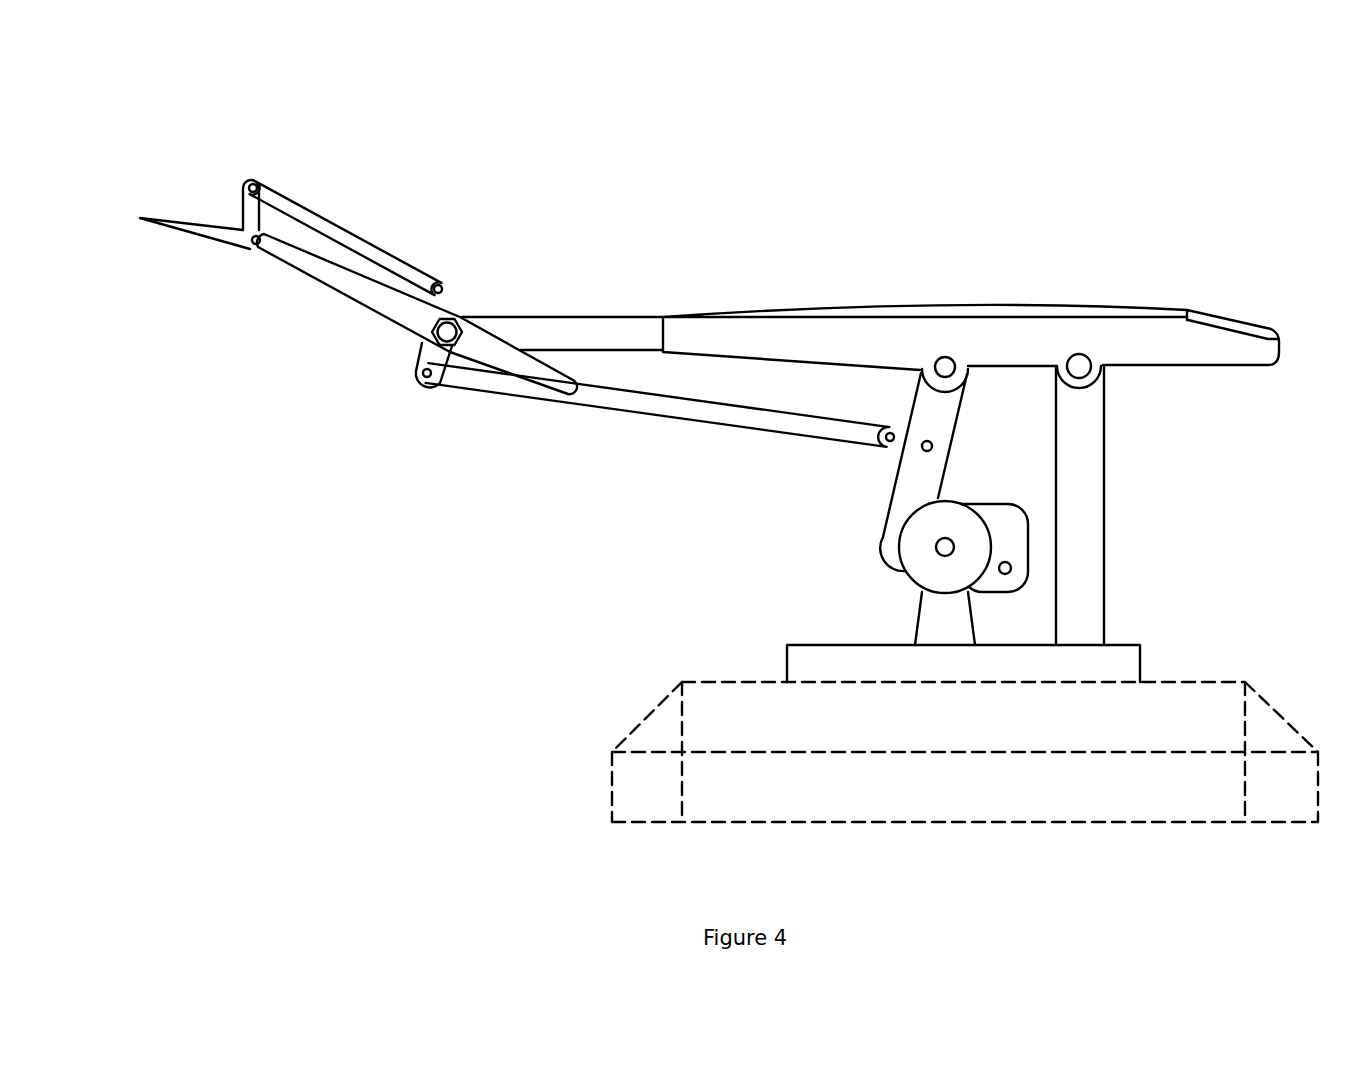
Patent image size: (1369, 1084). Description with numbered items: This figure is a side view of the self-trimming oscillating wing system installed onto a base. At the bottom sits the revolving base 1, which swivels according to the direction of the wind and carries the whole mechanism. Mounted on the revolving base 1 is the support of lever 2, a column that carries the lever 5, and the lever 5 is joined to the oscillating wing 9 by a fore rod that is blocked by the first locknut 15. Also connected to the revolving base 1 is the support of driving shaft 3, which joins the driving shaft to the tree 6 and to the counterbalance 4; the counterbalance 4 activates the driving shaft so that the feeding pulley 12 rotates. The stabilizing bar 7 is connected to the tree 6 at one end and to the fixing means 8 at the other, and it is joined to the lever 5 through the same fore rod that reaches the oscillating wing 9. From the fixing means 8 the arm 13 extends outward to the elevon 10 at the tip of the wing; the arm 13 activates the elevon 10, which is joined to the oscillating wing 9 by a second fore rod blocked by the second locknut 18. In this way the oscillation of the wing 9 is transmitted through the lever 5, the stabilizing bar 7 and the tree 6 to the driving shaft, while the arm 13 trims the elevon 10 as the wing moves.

The revolving base 1 is at (1023, 660).
The support of lever 2 is at (1085, 468).
The support of driving shaft 3 is at (945, 625).
The counterbalance 4 is at (1013, 532).
The lever 5 is at (908, 347).
The tree 6 is at (910, 482).
The stabilizing bar 7 is at (630, 402).
The fixing means 8 is at (422, 348).
The oscillating wing 9 is at (488, 345).
The elevon 10 is at (199, 229).
The feeding pulley 12 is at (950, 573).
The arm activating the elevon 13 is at (357, 241).
The first locknut 15 is at (424, 342).
The second locknut 18 is at (252, 245).